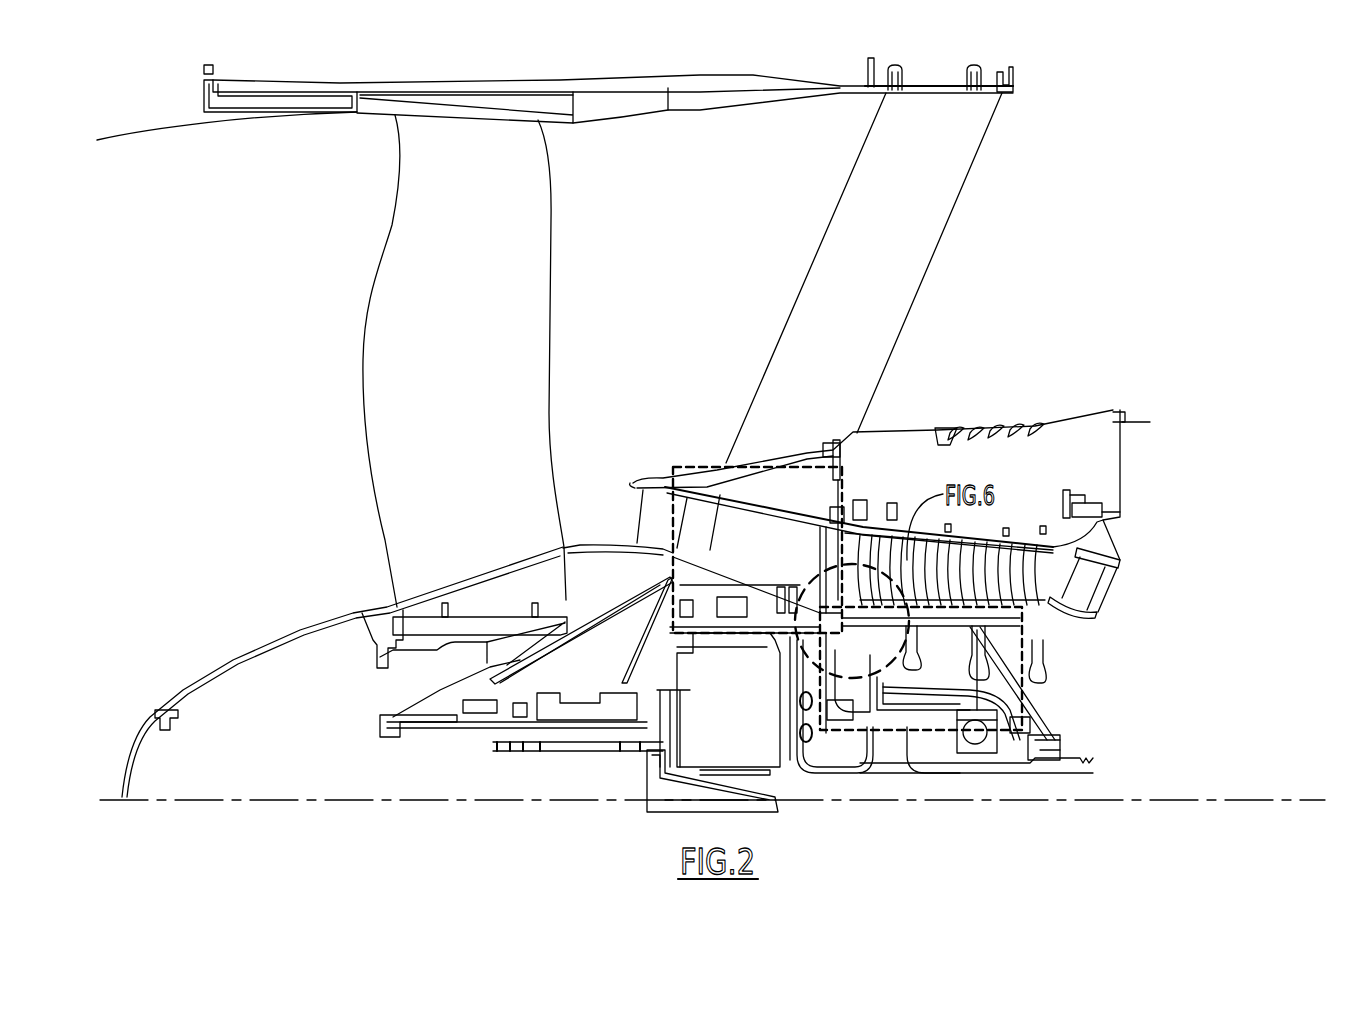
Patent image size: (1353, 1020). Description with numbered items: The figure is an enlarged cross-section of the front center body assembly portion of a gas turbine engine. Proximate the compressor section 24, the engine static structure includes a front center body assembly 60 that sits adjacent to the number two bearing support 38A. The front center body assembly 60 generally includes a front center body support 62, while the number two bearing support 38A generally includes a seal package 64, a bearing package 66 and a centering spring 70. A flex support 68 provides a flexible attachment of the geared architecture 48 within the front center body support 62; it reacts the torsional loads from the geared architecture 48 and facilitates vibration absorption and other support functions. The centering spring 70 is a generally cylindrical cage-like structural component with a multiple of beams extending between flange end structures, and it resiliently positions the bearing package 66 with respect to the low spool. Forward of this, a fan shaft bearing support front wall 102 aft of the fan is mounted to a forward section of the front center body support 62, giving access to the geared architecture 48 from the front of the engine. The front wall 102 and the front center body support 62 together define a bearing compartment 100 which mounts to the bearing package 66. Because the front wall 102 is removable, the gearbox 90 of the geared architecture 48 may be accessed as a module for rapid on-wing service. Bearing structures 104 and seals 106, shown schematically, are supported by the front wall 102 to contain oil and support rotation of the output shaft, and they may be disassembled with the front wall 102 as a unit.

The compressor section 24 is at (1163, 586).
The #2 bearing support 38A is at (1047, 652).
The geared architecture 48 is at (782, 772).
The front center body assembly 60 is at (847, 478).
The front center body support 62 is at (788, 560).
The seal package 64 is at (1040, 760).
The bearing package 66 is at (977, 747).
The flex support 68 is at (827, 660).
The centering spring 70 is at (927, 703).
The gearbox 90 is at (746, 710).
The bearing compartment 100 is at (673, 577).
The fan shaft bearing support front wall 102 is at (590, 628).
The bearing structures 104 is at (630, 708).
The seals 106 is at (481, 712).